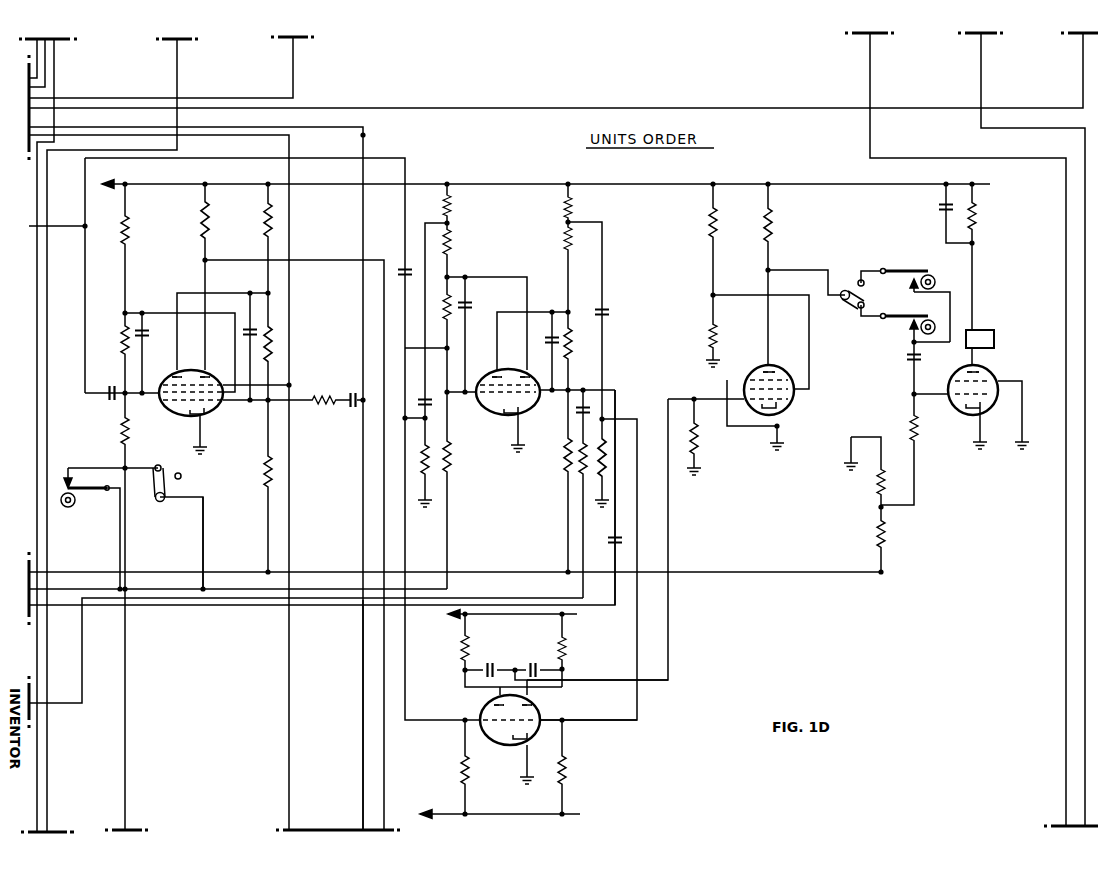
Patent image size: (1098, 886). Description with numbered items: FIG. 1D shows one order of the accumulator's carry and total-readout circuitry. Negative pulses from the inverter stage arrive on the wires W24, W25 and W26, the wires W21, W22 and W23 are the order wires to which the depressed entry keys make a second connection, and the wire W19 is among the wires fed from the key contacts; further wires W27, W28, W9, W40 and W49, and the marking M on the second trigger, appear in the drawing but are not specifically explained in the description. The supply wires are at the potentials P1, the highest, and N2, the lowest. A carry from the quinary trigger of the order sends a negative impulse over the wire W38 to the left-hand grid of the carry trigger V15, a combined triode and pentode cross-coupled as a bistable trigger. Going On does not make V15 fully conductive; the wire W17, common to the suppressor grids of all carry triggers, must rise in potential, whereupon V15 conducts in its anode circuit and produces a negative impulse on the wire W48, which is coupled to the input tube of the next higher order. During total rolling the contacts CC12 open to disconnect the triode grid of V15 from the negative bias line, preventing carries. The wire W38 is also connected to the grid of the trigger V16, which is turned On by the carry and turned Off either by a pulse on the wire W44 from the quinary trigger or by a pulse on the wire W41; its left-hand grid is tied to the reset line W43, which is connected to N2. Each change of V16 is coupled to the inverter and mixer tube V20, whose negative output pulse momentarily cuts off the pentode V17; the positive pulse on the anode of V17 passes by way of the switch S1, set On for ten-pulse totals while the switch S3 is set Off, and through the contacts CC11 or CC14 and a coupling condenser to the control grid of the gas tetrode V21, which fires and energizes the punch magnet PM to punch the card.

The wire W28 is at (40, 53).
The wire W27 is at (47, 70).
The wire W26 is at (56, 88).
The wire W25 is at (178, 70).
The wire W24 is at (294, 68).
The wire W21 is at (1083, 63).
The wire W19 is at (364, 136).
The wire W9 is at (365, 798).
The wire W17 is at (290, 168).
The wire W38 is at (406, 173).
The wire W48 is at (258, 261).
The wire W23 is at (870, 63).
The wire W22 is at (981, 63).
The highest potential wire P1 is at (540, 396).
The lowest potential wire N2 is at (486, 817).
The wire W40 is at (110, 577).
The reset line W43 is at (190, 593).
The wire W44 is at (200, 592).
The wire W41 is at (272, 600).
The wire W49 is at (127, 690).
The carry trigger tube V15 is at (190, 416).
The contacts CC12 is at (91, 486).
The switch S3 is at (155, 500).
The trigger V16 is at (508, 416).
The tube marking M is at (512, 358).
The pentode tube V17 is at (769, 415).
The switch S1 is at (840, 304).
The contacts CC14 is at (920, 270).
The contacts CC11 is at (908, 322).
The punch magnet PM is at (995, 340).
The gas tetrode V21 is at (968, 414).
The inverter and mixer tube V20 is at (482, 706).